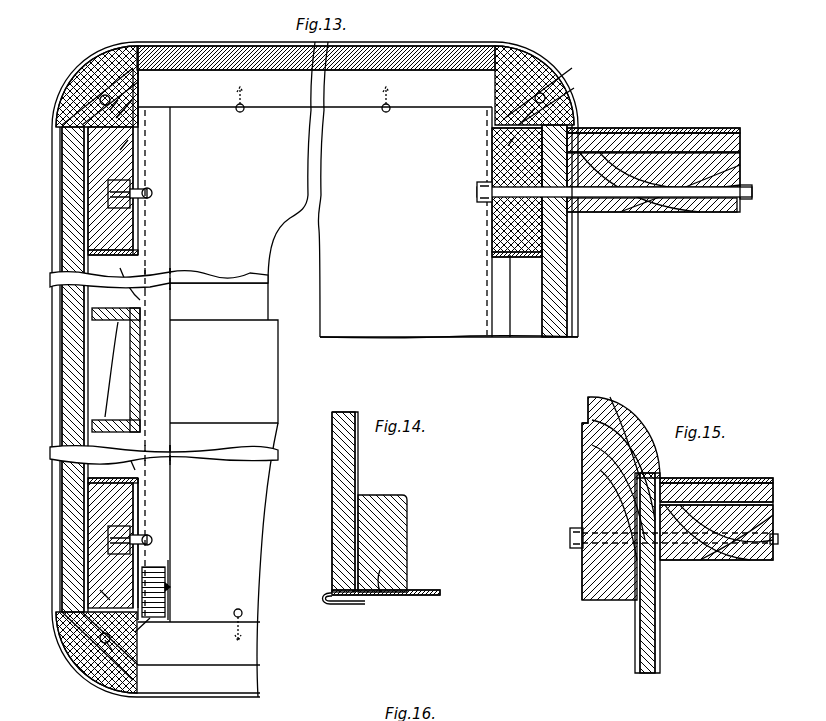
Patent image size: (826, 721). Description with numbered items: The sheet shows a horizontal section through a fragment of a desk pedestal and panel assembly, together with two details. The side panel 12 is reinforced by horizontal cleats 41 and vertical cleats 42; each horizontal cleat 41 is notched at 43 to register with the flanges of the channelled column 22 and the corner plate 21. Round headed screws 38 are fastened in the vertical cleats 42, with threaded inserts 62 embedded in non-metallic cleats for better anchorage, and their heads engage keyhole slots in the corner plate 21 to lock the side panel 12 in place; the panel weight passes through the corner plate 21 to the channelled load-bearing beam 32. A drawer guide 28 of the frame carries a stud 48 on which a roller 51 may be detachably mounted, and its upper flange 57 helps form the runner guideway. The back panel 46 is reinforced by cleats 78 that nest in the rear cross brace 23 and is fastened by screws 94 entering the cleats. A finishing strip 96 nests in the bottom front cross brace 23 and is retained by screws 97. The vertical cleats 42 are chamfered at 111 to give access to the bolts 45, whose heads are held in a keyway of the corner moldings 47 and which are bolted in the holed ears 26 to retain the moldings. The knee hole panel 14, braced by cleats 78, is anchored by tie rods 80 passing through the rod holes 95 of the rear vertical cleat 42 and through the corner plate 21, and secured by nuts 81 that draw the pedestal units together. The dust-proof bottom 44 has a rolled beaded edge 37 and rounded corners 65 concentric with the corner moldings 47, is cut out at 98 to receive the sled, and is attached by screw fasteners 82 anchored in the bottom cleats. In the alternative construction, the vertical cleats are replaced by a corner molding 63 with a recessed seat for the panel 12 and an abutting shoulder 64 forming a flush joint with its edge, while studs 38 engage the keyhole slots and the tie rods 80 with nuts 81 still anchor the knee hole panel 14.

In FIG. 13, the side panel 12 is at (62, 340).
In FIG. 14, the side panel 12 is at (344, 412).
In FIG. 15, the side panel 12 is at (650, 673).
In FIG. 13, the knee hole panel 14 is at (655, 133).
In FIG. 15, the knee hole panel 14 is at (727, 482).
In FIG. 13, the corner plate 21 is at (140, 234).
In FIG. 15, the corner plate 21 is at (582, 490).
In FIG. 13, the channelled column 22 is at (140, 402).
In FIG. 13, the cross brace 23 is at (351, 100).
In FIG. 13, the holed ear 26 is at (118, 117).
In FIG. 13, the drawer guide 28 is at (148, 523).
In FIG. 13, the load-bearing beam 32 is at (278, 381).
In FIG. 13, the beaded edge 37 is at (70, 66).
In FIG. 14, the beaded edge 37 is at (325, 598).
In FIG. 13, the round headed screw 38 is at (152, 193).
In FIG. 13, the horizontal cleat 41 is at (125, 300).
In FIG. 14, the horizontal cleat 41 is at (400, 513).
In FIG. 13, the vertical cleat 42 is at (92, 160).
In FIG. 13, the notch 43 is at (117, 326).
In FIG. 13, the dust-proof bottom 44 is at (378, 338).
In FIG. 14, the dust-proof bottom 44 is at (426, 589).
In FIG. 13, the bolt 45 is at (72, 96).
In FIG. 13, the back panel 46 is at (398, 54).
In FIG. 13, the corner molding 47 is at (92, 56).
In FIG. 13, the stud 48 is at (170, 589).
In FIG. 13, the roller 51 is at (167, 572).
In FIG. 13, the upper flange 57 is at (470, 274).
In FIG. 13, the threaded insert 62 is at (70, 210).
In FIG. 15, the corner molding 63 is at (624, 406).
In FIG. 15, the abutting shoulder 64 is at (656, 466).
In FIG. 13, the corner 65 is at (72, 680).
In FIG. 13, the cleat 78 is at (668, 213).
In FIG. 15, the cleat 78 is at (708, 561).
In FIG. 13, the tie rod 80 is at (752, 192).
In FIG. 15, the tie rod 80 is at (776, 547).
In FIG. 13, the nut 81 is at (477, 194).
In FIG. 15, the nut 81 is at (575, 550).
In FIG. 14, the screw fastener 82 is at (384, 597).
In FIG. 13, the screw 94 is at (240, 113).
In FIG. 13, the rod hole 95 is at (578, 236).
In FIG. 13, the finishing strip 96 is at (250, 675).
In FIG. 13, the screw 97 is at (238, 609).
In FIG. 13, the cut-out 98 is at (318, 292).
In FIG. 13, the chamfer 111 is at (128, 140).